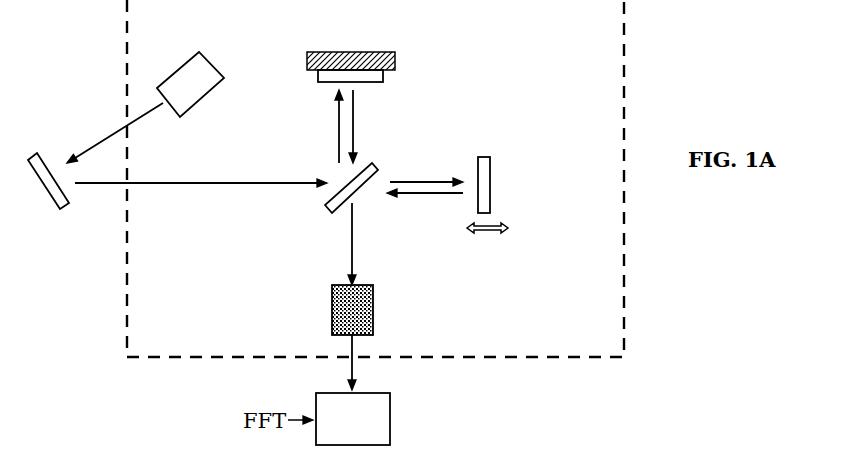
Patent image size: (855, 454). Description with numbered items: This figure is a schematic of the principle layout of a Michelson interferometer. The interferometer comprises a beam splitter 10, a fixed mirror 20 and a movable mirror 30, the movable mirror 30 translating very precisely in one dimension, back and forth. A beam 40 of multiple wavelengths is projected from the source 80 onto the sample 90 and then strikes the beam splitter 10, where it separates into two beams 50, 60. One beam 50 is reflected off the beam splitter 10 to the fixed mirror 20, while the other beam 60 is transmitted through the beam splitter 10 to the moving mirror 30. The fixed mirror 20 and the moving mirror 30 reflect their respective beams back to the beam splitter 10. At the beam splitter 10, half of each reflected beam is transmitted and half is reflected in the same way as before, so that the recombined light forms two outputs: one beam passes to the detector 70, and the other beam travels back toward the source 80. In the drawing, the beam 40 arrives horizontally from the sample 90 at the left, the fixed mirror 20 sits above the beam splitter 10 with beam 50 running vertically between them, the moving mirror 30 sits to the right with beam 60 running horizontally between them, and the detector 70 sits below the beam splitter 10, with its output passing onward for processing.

The beam splitter 10 is at (306, 219).
The fixed mirror 20 is at (387, 95).
The movable mirror 30 is at (465, 156).
The beam 40 is at (206, 166).
The beam 50 is at (318, 118).
The beam 60 is at (420, 197).
The detector 70 is at (320, 315).
The source 80 is at (166, 54).
The sample 90 is at (38, 196).